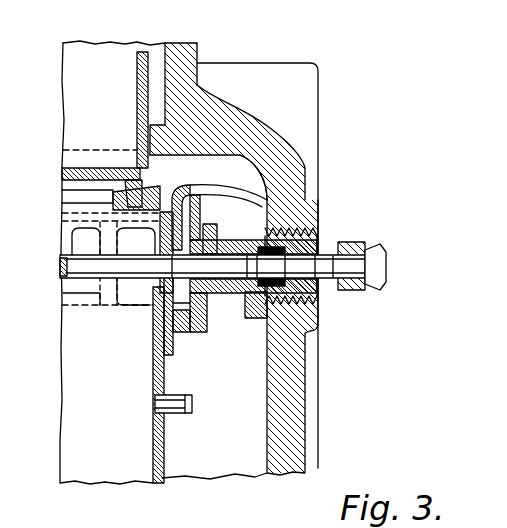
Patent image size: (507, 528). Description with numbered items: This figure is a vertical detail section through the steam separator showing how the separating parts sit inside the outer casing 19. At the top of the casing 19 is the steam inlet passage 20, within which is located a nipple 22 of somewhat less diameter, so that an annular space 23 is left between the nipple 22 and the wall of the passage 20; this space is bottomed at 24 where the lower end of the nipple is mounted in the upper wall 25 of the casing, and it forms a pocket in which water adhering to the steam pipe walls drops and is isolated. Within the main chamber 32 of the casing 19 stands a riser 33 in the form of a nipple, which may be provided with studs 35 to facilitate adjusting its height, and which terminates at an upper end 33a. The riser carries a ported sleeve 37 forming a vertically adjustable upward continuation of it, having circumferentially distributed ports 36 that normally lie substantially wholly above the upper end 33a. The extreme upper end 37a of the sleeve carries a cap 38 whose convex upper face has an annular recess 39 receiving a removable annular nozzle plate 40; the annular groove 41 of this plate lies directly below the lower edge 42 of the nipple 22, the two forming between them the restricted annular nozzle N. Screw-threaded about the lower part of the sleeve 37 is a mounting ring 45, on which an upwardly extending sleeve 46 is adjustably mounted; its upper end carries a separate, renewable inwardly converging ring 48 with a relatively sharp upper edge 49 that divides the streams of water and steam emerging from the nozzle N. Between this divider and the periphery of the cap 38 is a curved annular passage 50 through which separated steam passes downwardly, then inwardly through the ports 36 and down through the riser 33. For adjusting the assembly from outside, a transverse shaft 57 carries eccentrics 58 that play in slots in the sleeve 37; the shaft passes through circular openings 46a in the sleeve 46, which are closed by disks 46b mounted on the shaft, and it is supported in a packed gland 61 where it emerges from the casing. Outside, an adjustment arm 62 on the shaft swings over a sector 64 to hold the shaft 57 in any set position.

The outer casing 19 is at (314, 403).
The steam inlet passage 20 is at (161, 43).
The nipple 22 is at (135, 66).
The annular space 23 is at (157, 78).
The bottom of annular space 24 is at (155, 135).
The upper wall 25 is at (160, 166).
The annular nozzle N is at (240, 116).
The main chamber 32 is at (214, 465).
The riser 33 is at (158, 451).
The upper end of riser 33a is at (63, 293).
The studs 35 is at (192, 400).
The ports 36 is at (130, 244).
The ported sleeve 37 is at (170, 353).
The upper end of sleeve 37a is at (90, 213).
The cap 38 is at (62, 167).
The annular recess 39 is at (113, 203).
The annular nozzle plate 40 is at (115, 192).
The annular groove 41 is at (150, 180).
The lower edge of nipple 42 is at (133, 155).
The mounting ring 45 is at (187, 332).
The sleeve 46 is at (215, 322).
The circular openings 46a is at (266, 292).
The disks 46b is at (218, 235).
The ring 48 is at (262, 192).
The upper edge 49 is at (195, 182).
The curved annular passage 50 is at (200, 218).
The transverse shaft 57 is at (347, 262).
The eccentrics 58 is at (160, 283).
The packed gland 61 is at (300, 312).
The adjustment arm 62 is at (374, 250).
The sector 64 is at (319, 222).